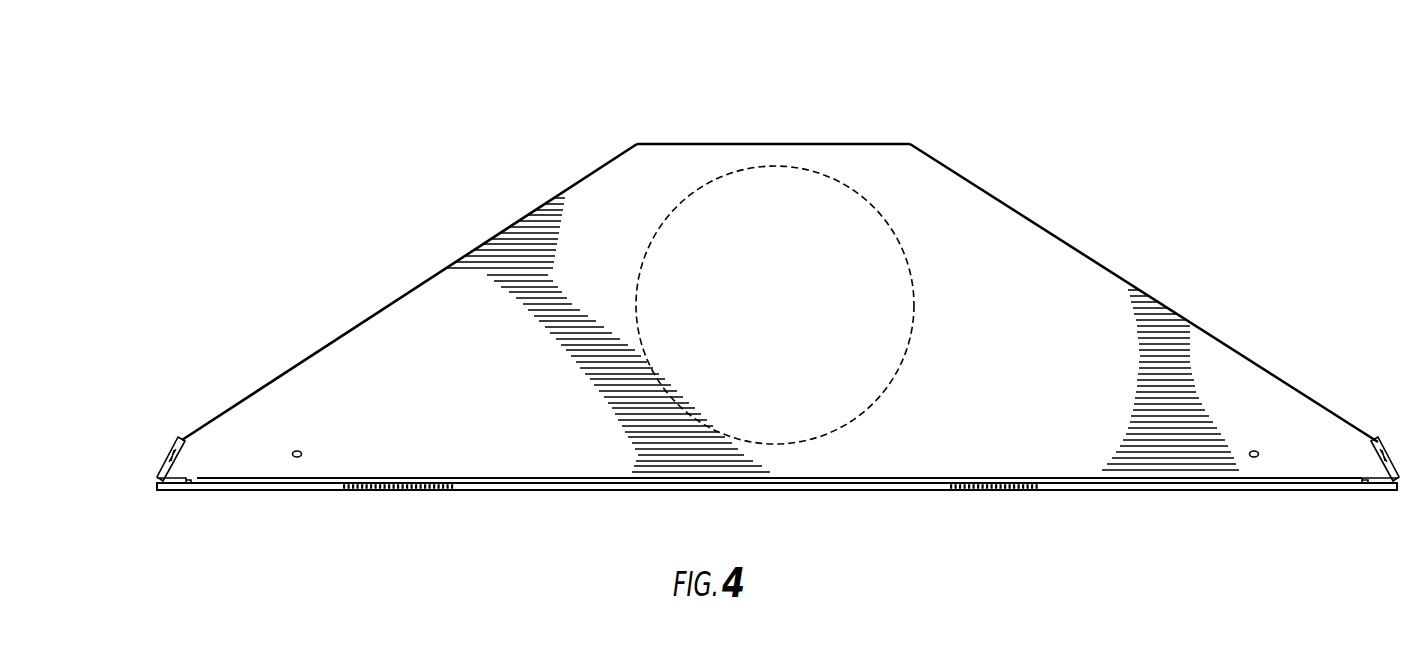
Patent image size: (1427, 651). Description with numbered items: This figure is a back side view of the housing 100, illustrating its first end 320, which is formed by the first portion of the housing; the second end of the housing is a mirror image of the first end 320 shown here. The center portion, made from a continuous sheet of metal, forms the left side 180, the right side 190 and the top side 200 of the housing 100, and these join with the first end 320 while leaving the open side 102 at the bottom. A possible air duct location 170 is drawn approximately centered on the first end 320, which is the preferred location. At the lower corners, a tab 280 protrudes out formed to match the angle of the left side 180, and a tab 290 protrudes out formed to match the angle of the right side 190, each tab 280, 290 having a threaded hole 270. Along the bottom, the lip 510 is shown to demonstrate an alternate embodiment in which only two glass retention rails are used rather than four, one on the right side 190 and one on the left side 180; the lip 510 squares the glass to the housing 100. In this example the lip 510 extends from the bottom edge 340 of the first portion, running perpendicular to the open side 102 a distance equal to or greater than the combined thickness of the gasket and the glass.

The housing 100 is at (770, 46).
The open side 102 is at (589, 502).
The possible air duct location 170 is at (802, 252).
The left side 180 is at (450, 242).
The right side 190 is at (1144, 261).
The top side 200 is at (790, 144).
The threaded hole 270 is at (300, 451).
The tab 280 is at (166, 444).
The tab 290 is at (1419, 440).
The first end 320 is at (1003, 440).
The bottom edge 340 is at (879, 503).
The lip 510 is at (146, 487).